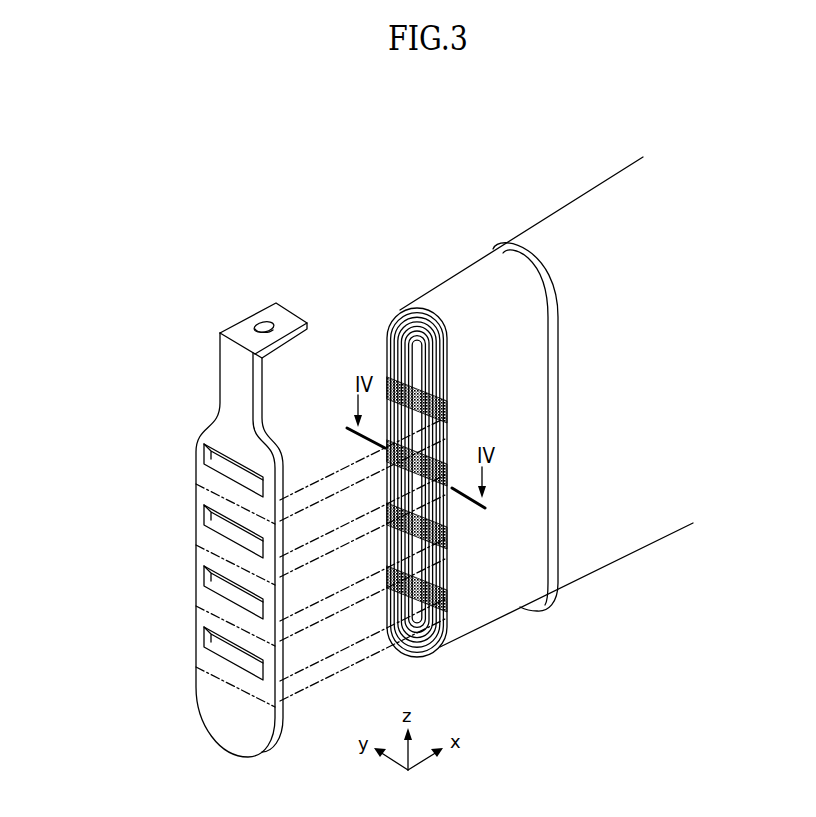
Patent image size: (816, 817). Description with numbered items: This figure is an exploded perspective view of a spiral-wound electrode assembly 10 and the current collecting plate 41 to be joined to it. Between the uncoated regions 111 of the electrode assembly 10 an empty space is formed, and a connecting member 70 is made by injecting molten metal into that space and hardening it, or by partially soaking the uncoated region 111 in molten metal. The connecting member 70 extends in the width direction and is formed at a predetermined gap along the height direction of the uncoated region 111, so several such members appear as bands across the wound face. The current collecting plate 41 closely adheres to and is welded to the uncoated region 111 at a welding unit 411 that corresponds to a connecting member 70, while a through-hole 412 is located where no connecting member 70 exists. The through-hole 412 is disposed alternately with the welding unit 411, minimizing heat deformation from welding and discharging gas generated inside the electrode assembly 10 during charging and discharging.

The electrode assembly 10 is at (615, 160).
The uncoated region 111 is at (445, 274).
The connecting member 70 is at (425, 463).
The current collecting plate 41 is at (212, 530).
The welding unit 411 is at (202, 543).
The through-hole 412 is at (225, 592).